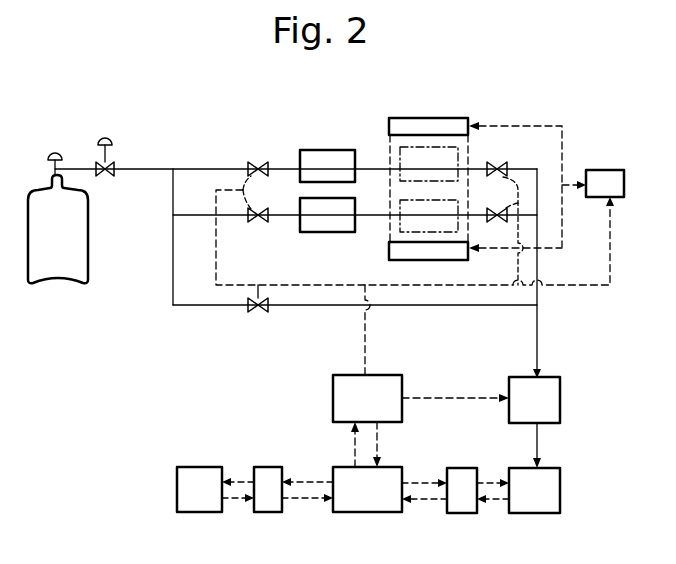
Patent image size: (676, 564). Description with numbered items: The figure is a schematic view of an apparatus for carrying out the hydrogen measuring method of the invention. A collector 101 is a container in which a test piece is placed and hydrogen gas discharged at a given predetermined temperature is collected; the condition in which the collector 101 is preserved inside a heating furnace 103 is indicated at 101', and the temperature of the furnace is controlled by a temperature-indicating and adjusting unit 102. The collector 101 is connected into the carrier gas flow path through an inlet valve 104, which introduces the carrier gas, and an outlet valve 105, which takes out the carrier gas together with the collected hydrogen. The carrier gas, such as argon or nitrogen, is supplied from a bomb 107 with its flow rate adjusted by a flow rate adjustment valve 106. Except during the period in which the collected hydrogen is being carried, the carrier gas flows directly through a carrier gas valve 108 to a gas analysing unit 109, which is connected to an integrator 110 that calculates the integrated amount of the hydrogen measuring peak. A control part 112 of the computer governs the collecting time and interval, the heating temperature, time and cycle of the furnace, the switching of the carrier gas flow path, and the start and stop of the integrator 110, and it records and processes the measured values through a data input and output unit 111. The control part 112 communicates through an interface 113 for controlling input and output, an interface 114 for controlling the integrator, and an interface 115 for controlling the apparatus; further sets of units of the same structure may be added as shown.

The collector 101 is at (327, 152).
The collector preserved in heating furnace 101' is at (429, 164).
The temperature-indicating and adjusting unit 102 is at (593, 183).
The heating furnace 103 is at (475, 182).
The inlet valve 104 is at (248, 163).
The outlet valve 105 is at (505, 215).
The flow rate adjustment valve 106 is at (114, 166).
The bomb 107 is at (58, 218).
The carrier gas valve 108 is at (258, 311).
The gas analysing unit 109 is at (534, 422).
The integrator 110 is at (534, 490).
The data input and output unit 111 is at (199, 489).
The control part of the computer 112 is at (367, 489).
The interface for controlling the input and output 113 is at (277, 489).
The interface for controlling the integrator 114 is at (455, 490).
The interface for controlling the apparatus 115 is at (421, 421).